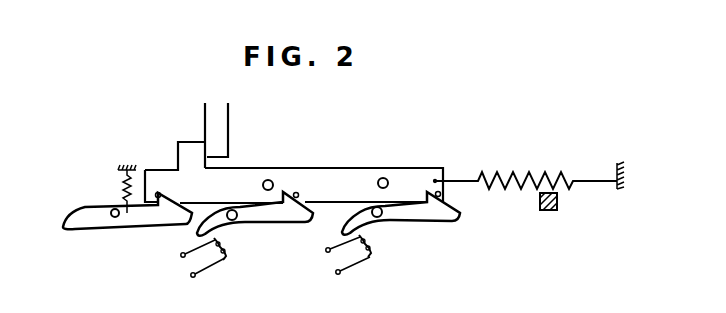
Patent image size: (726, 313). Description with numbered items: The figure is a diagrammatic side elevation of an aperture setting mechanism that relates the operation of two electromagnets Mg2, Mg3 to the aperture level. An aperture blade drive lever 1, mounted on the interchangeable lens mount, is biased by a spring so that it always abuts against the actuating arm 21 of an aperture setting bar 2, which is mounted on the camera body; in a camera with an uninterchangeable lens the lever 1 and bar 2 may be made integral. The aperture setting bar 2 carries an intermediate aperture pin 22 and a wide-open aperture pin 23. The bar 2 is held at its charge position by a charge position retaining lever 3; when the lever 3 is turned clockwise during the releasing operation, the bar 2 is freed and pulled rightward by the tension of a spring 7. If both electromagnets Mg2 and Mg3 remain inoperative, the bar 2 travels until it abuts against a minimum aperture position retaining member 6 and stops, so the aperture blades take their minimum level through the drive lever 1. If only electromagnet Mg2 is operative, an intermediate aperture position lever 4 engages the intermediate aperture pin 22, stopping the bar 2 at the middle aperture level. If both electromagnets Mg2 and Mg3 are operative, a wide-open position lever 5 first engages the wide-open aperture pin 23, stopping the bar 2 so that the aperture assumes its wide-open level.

The aperture blade drive lever 1 is at (229, 115).
The aperture setting bar 2 is at (331, 167).
The actuating arm 21 is at (188, 142).
The intermediate aperture pin 22 is at (383, 178).
The wide-open aperture pin 23 is at (268, 180).
The charge position retaining lever 3 is at (147, 225).
The intermediate aperture position lever 4 is at (433, 223).
The wide-open position lever 5 is at (282, 224).
The minimum aperture position retaining member 6 is at (547, 212).
The spring 7 is at (517, 172).
The electromagnet Mg2 is at (362, 265).
The electromagnet Mg3 is at (220, 266).